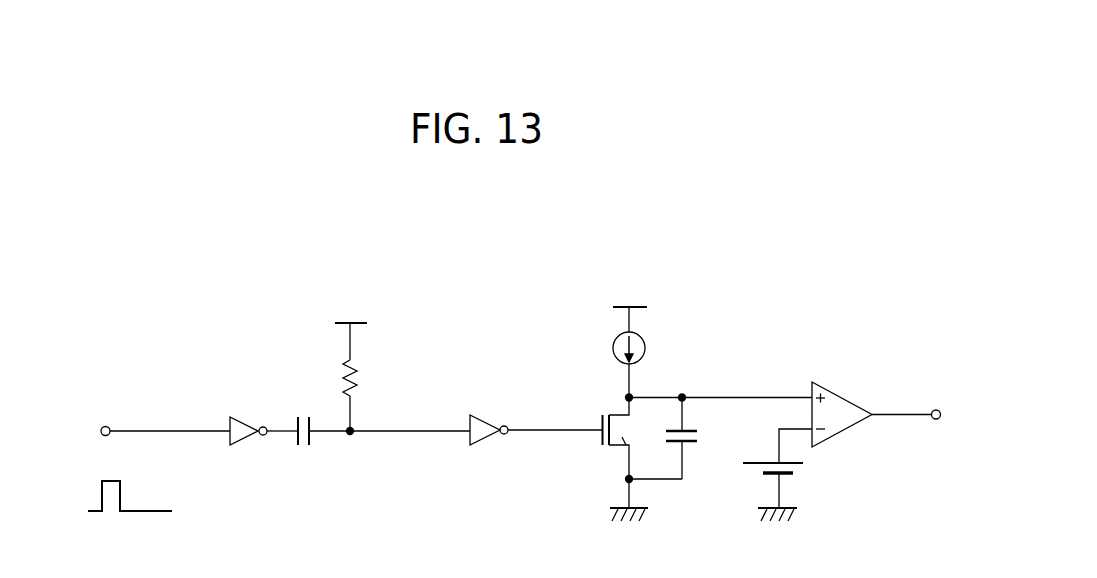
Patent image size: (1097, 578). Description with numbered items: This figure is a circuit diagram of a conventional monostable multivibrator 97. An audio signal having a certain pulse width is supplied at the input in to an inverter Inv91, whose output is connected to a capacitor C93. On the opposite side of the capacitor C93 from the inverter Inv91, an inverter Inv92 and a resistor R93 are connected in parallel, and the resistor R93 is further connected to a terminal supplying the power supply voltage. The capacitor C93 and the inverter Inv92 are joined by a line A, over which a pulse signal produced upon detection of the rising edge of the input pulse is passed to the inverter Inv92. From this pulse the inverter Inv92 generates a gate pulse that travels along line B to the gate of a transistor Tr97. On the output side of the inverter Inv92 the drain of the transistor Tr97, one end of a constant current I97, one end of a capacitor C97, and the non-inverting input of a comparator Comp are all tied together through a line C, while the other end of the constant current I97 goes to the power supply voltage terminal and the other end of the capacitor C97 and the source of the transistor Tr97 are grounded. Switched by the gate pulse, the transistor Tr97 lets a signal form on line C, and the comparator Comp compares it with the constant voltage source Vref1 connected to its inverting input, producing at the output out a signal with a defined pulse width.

The monostable multivibrator 97 is at (767, 272).
The inverter Inv91 is at (247, 445).
The capacitor C93 is at (305, 445).
The resistor R93 is at (358, 366).
The inverter Inv92 is at (487, 445).
The transistor Tr97 is at (622, 413).
The constant current I97 is at (646, 346).
The capacitor C97 is at (697, 436).
The comparator Comp is at (830, 389).
The constant voltage source Vref1 is at (805, 467).
The audio signal input in is at (164, 416).
The output signal out is at (933, 402).
The line A is at (417, 415).
The gate pulse line B is at (540, 416).
The line C is at (713, 383).